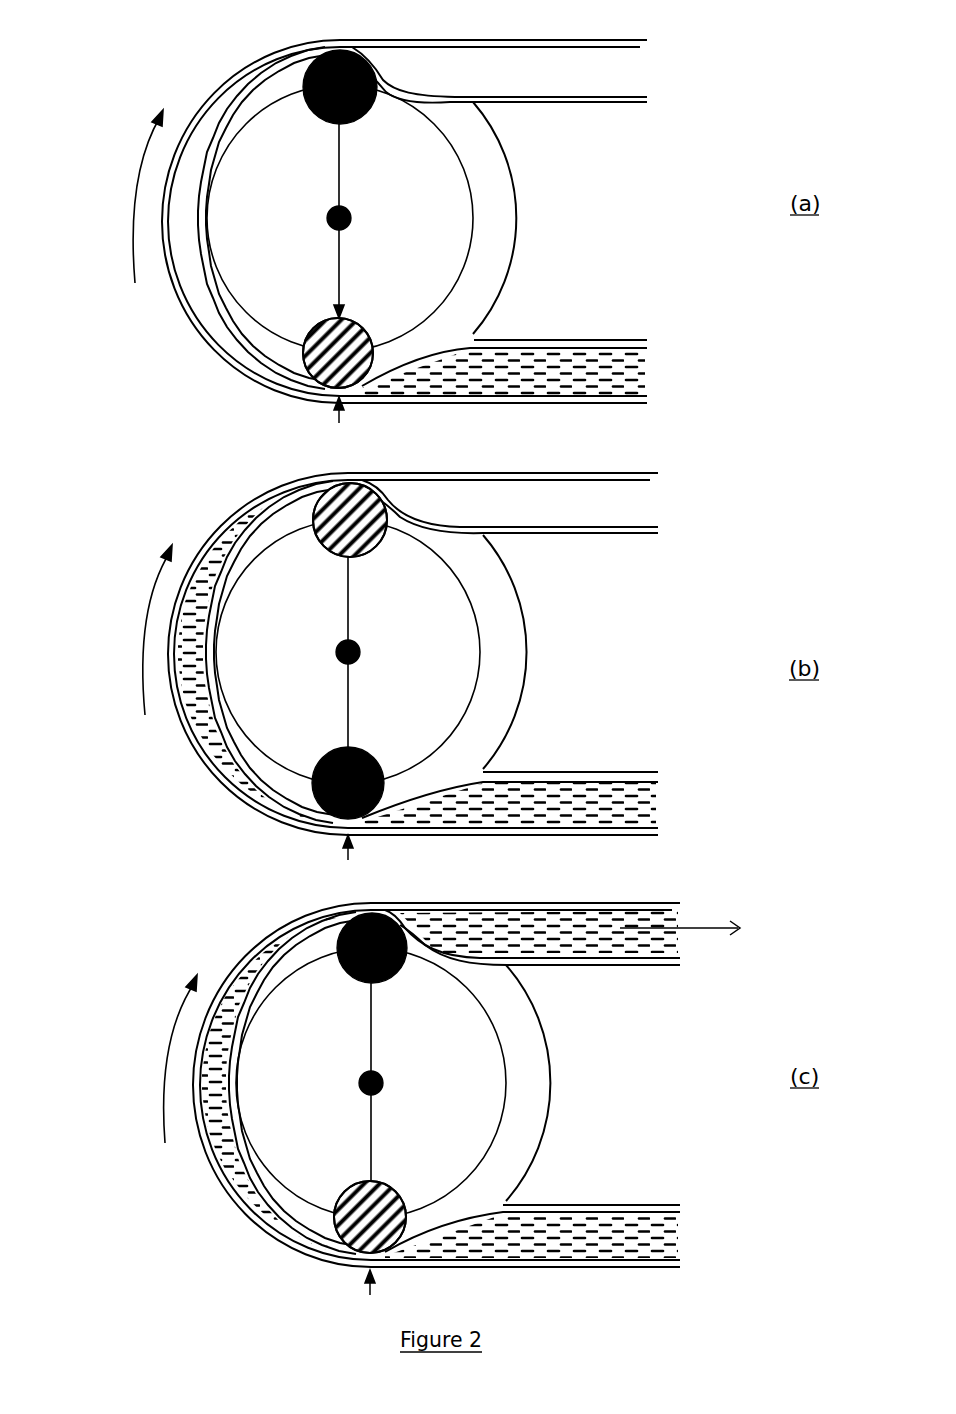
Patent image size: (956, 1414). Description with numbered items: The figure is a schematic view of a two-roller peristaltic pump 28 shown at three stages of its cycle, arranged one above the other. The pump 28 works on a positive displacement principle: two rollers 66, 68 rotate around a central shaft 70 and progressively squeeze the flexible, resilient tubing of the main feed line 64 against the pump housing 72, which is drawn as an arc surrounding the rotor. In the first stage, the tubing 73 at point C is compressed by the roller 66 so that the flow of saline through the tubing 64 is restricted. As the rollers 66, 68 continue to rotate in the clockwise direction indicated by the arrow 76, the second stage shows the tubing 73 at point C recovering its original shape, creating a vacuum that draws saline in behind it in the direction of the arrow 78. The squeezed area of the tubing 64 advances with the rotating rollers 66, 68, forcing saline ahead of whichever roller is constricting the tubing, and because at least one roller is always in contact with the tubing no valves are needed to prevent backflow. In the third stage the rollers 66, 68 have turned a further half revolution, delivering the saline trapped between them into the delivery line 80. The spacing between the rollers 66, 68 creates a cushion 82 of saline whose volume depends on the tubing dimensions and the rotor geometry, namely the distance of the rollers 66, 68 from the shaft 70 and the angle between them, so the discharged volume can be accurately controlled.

The peristaltic pump 28 is at (695, 148).
The main feed line 64 is at (183, 278).
The roller 66 is at (330, 363).
The roller 68 is at (333, 47).
The shaft 70 is at (352, 214).
The pump housing 72 is at (517, 198).
The tubing 73 is at (317, 397).
The arrow 76 is at (127, 197).
The arrow 78 is at (593, 378).
The delivery line 80 is at (590, 52).
The cushion 82 is at (203, 722).